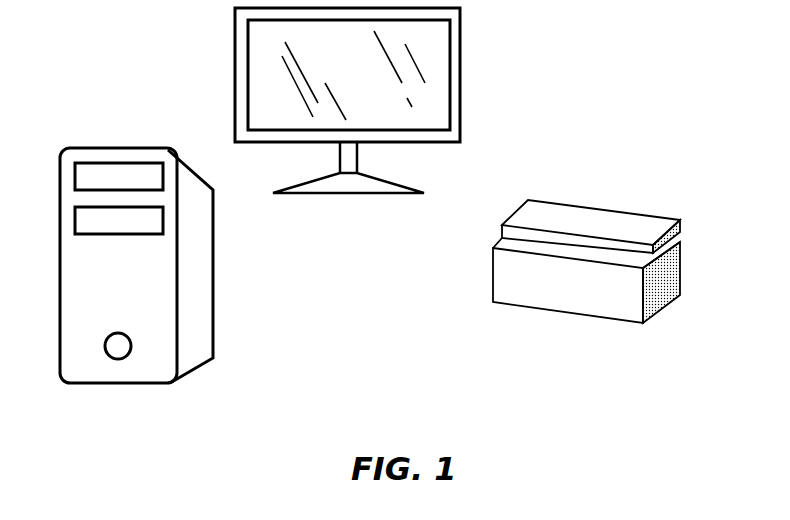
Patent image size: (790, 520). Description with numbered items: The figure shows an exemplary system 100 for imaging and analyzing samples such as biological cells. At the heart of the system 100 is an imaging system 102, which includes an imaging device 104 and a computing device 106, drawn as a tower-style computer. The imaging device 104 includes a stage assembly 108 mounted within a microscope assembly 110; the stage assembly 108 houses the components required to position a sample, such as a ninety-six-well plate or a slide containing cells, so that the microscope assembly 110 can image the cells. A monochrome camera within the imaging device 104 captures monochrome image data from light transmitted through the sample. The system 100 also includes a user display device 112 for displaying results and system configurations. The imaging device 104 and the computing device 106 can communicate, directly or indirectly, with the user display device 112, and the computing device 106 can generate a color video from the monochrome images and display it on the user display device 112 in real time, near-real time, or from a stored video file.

The system 100 is at (162, 19).
The imaging system 102 is at (458, 325).
The imaging device 104 is at (462, 277).
The computing device 106 is at (197, 314).
The stage assembly 108 is at (570, 215).
The microscope assembly 110 is at (615, 295).
The user display device 112 is at (435, 100).